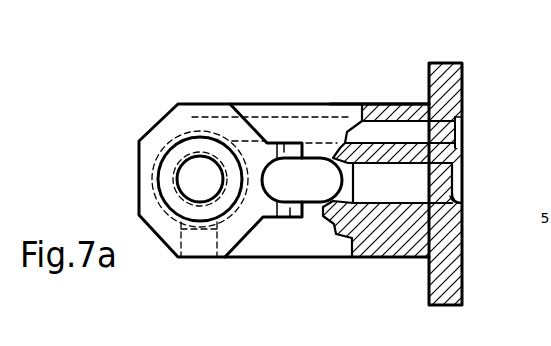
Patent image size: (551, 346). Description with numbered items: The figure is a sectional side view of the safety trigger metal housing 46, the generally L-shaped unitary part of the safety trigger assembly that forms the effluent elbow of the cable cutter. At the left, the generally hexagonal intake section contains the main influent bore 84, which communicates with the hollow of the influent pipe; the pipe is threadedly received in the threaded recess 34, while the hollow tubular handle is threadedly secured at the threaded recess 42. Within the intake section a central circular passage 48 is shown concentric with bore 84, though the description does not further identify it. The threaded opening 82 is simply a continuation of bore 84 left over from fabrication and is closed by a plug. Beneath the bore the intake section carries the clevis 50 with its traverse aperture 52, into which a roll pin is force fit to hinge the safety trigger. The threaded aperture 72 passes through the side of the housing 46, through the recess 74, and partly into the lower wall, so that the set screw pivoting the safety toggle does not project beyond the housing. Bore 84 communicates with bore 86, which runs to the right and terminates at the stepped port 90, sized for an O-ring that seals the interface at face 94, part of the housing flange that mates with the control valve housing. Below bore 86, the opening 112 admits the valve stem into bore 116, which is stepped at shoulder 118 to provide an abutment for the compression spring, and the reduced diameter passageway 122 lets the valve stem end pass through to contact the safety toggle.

The threaded recess 34 is at (188, 161).
The threaded recess 42 is at (139, 169).
The safety trigger metal housing 46 is at (343, 104).
The shaft bore 48 is at (192, 186).
The clevis 50 is at (273, 222).
The traverse aperture 52 is at (283, 240).
The threaded aperture 72 is at (288, 228).
The recess 74 is at (293, 188).
The threaded opening 82 is at (198, 259).
The main influent bore 84 is at (207, 142).
The bore 86 is at (393, 140).
The stepped port 90 is at (463, 130).
The face 94 is at (463, 64).
The opening 112 is at (456, 198).
The bore 116 is at (391, 192).
The shoulder 118 is at (338, 236).
The reduced diameter passageway 122 is at (353, 128).